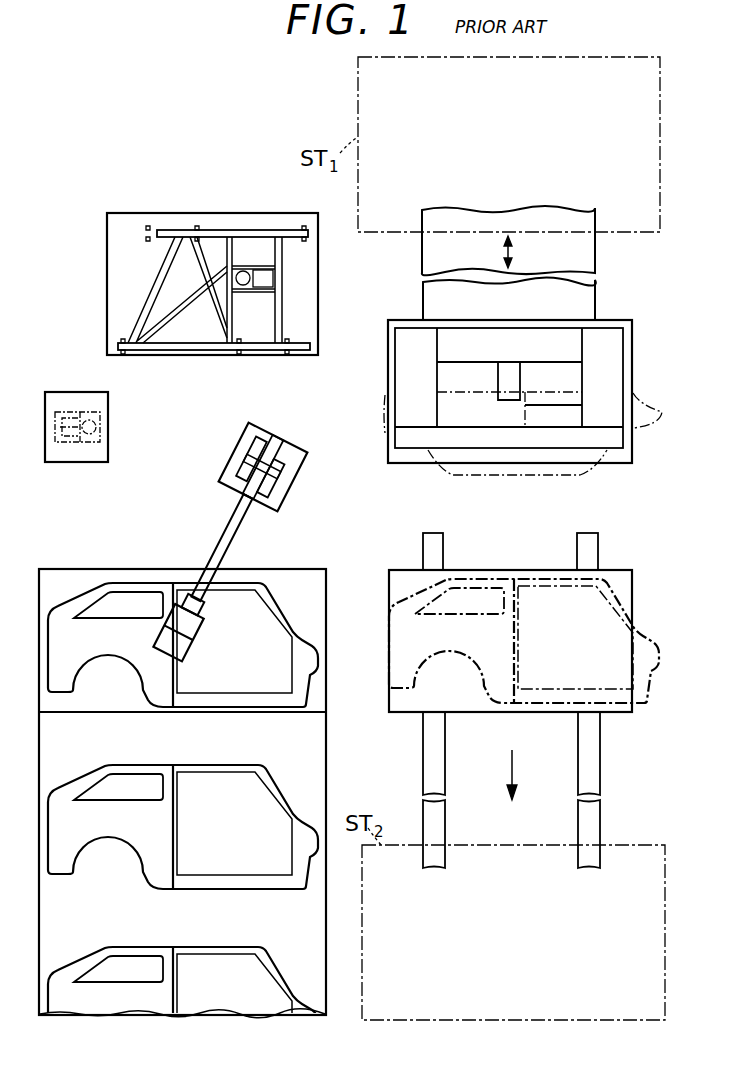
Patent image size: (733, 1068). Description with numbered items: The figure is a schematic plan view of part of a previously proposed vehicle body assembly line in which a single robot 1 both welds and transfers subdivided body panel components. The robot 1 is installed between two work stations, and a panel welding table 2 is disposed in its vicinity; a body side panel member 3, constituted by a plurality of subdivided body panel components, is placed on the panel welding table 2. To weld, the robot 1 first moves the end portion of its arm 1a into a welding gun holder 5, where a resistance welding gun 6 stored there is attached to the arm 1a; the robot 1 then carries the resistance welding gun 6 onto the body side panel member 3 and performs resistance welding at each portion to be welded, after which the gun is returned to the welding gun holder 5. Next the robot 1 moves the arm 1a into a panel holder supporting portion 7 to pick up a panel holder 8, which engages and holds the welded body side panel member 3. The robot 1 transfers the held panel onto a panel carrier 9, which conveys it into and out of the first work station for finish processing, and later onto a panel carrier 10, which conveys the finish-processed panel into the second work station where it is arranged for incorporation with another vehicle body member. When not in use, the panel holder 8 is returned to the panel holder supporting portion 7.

The robot 1 is at (297, 458).
The arm 1a is at (230, 530).
The panel welding table 2 is at (57, 568).
The body side panel member 3 is at (146, 673).
The welding gun holder 5 is at (105, 408).
The resistance welding gun 6 is at (95, 447).
The panel holder supporting portion 7 is at (115, 297).
The panel holder 8 is at (220, 230).
The panel carrier 9 is at (408, 355).
The panel carrier 10 is at (403, 705).